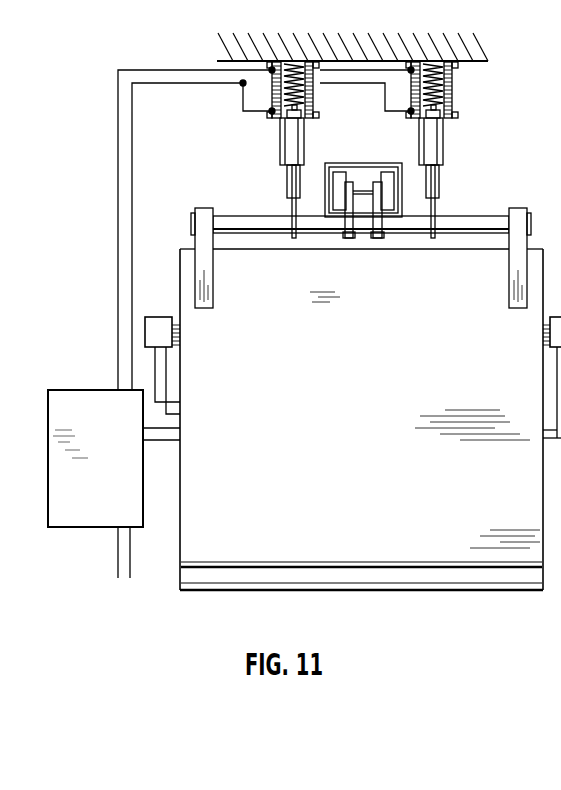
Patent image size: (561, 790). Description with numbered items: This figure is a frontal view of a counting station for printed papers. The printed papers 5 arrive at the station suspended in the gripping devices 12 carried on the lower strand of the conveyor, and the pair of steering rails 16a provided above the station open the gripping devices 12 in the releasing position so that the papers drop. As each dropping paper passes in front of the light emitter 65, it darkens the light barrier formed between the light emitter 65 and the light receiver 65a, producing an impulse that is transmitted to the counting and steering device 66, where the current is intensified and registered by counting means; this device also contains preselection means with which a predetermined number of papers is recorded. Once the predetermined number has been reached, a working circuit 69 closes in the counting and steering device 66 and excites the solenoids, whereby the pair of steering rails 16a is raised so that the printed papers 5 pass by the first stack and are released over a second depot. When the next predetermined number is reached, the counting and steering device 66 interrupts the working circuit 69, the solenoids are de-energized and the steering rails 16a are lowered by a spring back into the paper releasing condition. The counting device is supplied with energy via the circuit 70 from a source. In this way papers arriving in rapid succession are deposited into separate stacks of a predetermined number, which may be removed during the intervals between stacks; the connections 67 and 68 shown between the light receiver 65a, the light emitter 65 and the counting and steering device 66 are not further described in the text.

The printed papers 5 is at (192, 500).
The gripping devices 12 is at (518, 248).
The pair of steering rails 16a is at (281, 190).
The light emitter 65 is at (165, 332).
The light receiver 65a is at (550, 343).
The counting and steering device 66 is at (55, 503).
The connecting line 67 is at (557, 390).
The connecting line 68 is at (164, 395).
The working circuit 69 is at (126, 170).
The circuit 70 is at (117, 570).